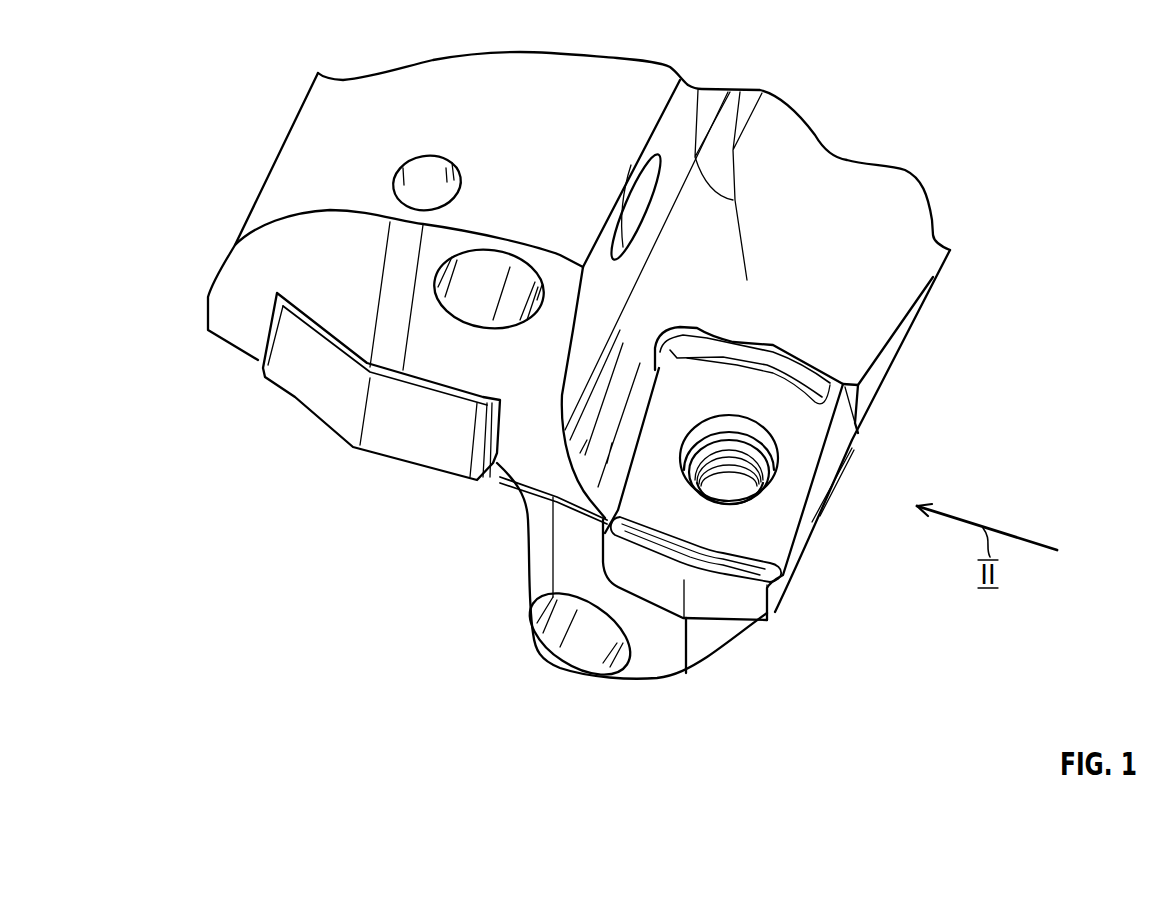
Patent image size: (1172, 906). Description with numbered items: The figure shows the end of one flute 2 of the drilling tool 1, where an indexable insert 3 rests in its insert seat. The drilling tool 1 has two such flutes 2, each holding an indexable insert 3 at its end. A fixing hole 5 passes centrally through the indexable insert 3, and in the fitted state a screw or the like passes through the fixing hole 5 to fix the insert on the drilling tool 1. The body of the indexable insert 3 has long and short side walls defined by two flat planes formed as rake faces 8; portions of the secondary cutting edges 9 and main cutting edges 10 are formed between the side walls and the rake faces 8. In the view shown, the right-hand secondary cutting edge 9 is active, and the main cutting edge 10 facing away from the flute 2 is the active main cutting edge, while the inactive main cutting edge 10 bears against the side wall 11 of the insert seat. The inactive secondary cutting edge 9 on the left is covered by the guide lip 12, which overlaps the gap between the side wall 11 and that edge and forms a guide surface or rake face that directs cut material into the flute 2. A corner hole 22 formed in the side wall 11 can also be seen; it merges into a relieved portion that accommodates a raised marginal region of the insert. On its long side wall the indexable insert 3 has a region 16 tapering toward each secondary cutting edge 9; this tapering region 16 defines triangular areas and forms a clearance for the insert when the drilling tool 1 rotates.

The drilling tool 1 is at (611, 404).
The flute 2 is at (827, 177).
The indexable insert 3 is at (410, 442).
The fixing hole 5 is at (742, 478).
The rake face 8 is at (740, 505).
The secondary cutting edge 9 is at (813, 490).
The main cutting edge 10 is at (800, 363).
The side wall of the insert seat 11 is at (852, 405).
The guide lip 12 is at (620, 455).
The tapering region 16 is at (843, 442).
The corner hole 22 is at (693, 325).